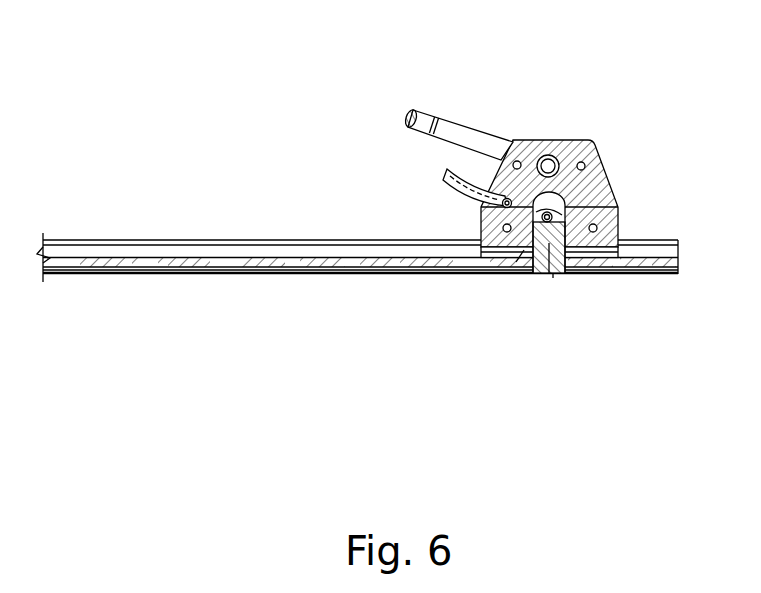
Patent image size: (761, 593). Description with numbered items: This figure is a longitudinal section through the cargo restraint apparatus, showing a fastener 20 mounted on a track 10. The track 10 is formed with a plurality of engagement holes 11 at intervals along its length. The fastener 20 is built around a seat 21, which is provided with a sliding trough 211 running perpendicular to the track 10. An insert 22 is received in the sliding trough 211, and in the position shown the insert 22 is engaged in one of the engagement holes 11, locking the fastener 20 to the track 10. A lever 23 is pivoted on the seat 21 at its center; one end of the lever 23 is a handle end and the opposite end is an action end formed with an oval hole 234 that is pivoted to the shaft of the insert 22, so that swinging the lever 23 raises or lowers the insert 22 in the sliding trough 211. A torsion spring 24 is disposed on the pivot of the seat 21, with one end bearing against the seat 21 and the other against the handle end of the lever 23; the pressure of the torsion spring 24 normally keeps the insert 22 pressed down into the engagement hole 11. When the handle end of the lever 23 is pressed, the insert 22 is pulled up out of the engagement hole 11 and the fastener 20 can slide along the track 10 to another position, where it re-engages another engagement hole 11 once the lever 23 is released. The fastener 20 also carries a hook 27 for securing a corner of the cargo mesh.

The track 10 is at (103, 265).
The engagement holes 11 is at (145, 265).
The fastener 20 is at (510, 181).
The seat 21 is at (563, 139).
The sliding trough 211 is at (557, 203).
The insert 22 is at (552, 271).
The oval hole 234 is at (513, 275).
The lever 23 is at (450, 183).
The torsion spring 24 is at (500, 199).
The hook 27 is at (447, 127).